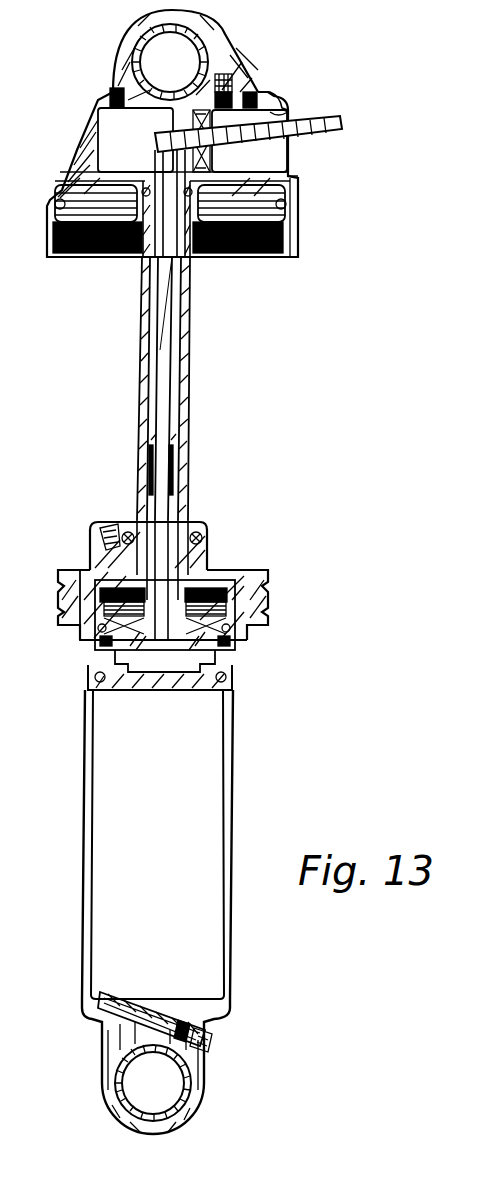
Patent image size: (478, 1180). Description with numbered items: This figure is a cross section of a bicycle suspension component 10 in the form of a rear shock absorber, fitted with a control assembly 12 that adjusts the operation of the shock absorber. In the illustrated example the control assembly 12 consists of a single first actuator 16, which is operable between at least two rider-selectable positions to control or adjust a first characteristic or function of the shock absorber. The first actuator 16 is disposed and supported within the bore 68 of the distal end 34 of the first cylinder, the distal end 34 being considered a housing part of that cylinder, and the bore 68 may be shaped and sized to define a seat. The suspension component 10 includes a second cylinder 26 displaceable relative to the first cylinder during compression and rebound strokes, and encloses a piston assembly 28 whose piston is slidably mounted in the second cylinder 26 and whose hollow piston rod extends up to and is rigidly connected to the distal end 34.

The suspension component 10 is at (277, 290).
The control assembly 12 is at (318, 156).
The first actuator 16 is at (338, 117).
The second cylinder 26 is at (232, 812).
The piston assembly 28 is at (230, 645).
The distal end 34 is at (238, 80).
The bore 68 is at (292, 110).